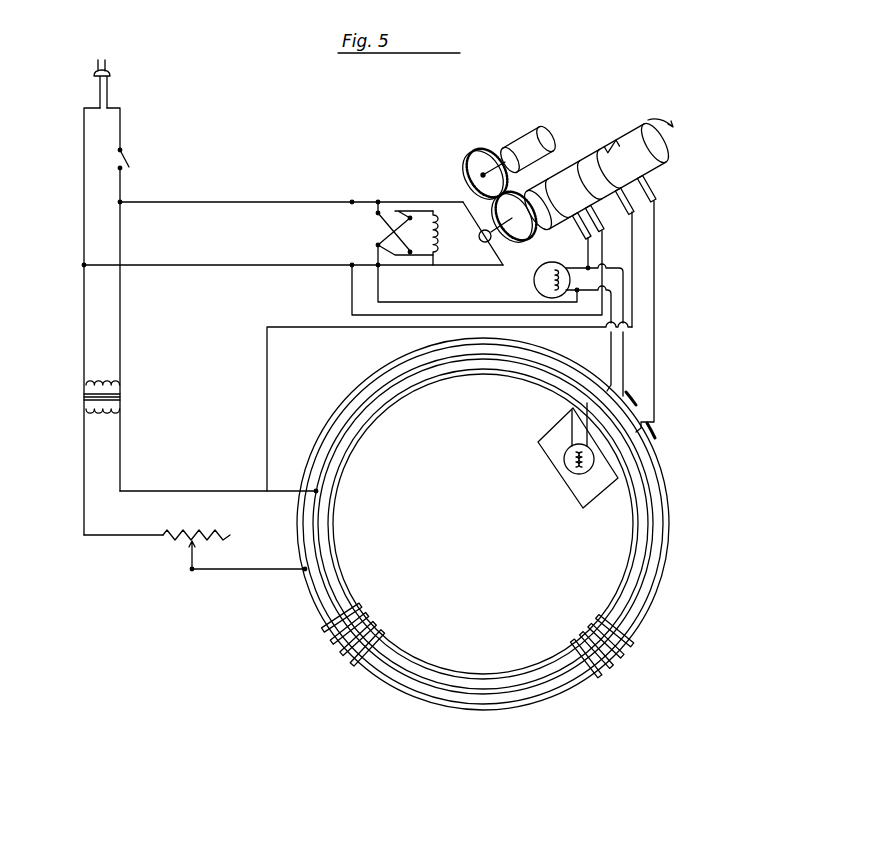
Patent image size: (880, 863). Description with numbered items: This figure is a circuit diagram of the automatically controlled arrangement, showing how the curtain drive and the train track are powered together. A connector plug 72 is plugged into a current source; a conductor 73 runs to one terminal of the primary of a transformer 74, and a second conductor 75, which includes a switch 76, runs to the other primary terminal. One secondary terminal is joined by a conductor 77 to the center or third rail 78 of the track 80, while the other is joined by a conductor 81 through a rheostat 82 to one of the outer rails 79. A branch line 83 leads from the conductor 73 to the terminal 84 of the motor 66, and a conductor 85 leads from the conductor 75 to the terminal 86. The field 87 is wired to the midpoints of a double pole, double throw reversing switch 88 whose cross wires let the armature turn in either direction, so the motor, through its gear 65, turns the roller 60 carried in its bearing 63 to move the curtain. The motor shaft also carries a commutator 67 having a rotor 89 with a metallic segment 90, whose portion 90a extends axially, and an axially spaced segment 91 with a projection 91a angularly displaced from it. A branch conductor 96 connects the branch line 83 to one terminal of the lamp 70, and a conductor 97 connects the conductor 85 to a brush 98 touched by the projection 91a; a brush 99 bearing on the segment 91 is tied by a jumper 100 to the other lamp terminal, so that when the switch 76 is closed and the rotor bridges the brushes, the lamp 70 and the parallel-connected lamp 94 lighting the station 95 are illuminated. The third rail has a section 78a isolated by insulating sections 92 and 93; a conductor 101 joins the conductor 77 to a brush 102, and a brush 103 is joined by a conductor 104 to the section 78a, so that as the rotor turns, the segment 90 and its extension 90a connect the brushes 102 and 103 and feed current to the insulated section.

The roller 60 is at (528, 140).
The bearing 63 is at (470, 160).
The gear 65 is at (528, 235).
The motor 66 is at (479, 240).
The commutator 67 is at (631, 119).
The lamp 70 is at (550, 270).
The connector plug 72 is at (112, 74).
The conductor 73 is at (84, 223).
The transformer 74 is at (80, 395).
The conductor 75 is at (120, 306).
The switch 76 is at (124, 151).
The conductor 77 is at (160, 491).
The third rail 78 is at (320, 510).
The insulated section 78a is at (650, 452).
The outer rail 79 is at (310, 593).
The track 80 is at (389, 616).
The conductor 81 is at (110, 536).
The rheostat 82 is at (205, 534).
The branch line 83 is at (240, 267).
The terminal 84 is at (503, 265).
The conductor 85 is at (234, 202).
The terminal 86 is at (463, 202).
The field 87 is at (433, 265).
The reversing switch 88 is at (404, 210).
The rotor 89 is at (661, 165).
The metallic segment 90 is at (604, 152).
The extension 90a is at (619, 148).
The metallic segment 91 is at (560, 178).
The projection 91a is at (598, 191).
The insulating section 92 is at (610, 365).
The insulating section 93 is at (655, 497).
The lamp 94 is at (567, 467).
The station 95 is at (583, 508).
The branch conductor 96 is at (386, 305).
The conductor 97 is at (352, 310).
The brush 98 is at (606, 212).
The brush 99 is at (583, 230).
The jumper 100 is at (590, 248).
The conductor 101 is at (298, 328).
The brush 102 is at (640, 222).
The brush 103 is at (660, 180).
The conductor 104 is at (656, 295).